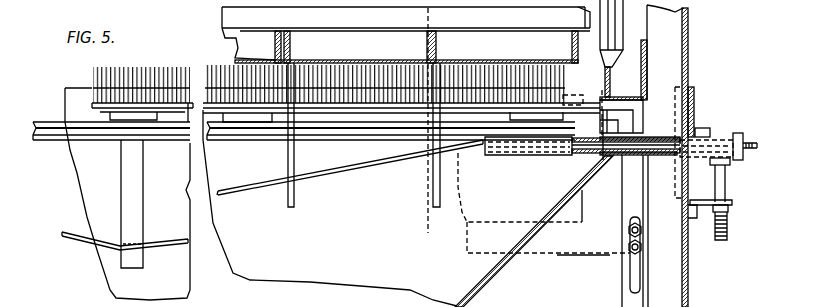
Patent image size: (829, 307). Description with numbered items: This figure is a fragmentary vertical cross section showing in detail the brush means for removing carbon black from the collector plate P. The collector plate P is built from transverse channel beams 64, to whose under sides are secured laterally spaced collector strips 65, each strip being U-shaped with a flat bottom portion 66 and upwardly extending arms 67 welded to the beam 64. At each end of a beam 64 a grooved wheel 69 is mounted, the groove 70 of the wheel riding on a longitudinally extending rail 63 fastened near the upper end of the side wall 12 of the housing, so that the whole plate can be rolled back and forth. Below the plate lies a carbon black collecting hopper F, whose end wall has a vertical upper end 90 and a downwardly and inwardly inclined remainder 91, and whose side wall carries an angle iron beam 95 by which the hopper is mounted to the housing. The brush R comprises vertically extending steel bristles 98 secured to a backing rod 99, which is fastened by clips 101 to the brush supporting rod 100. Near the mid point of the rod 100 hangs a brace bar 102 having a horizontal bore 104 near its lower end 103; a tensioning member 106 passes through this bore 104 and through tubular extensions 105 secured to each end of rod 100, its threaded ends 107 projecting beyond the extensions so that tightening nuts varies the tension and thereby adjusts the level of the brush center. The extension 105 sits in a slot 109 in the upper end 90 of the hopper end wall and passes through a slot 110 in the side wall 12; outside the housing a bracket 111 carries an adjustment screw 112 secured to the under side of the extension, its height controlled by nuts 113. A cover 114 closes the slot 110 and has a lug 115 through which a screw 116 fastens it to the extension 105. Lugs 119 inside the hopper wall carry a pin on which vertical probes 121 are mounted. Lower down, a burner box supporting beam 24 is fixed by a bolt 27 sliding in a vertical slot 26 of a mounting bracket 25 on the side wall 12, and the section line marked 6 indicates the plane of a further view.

The steel bristles 98 is at (100, 78).
The brush R is at (57, 152).
The backing rod 99 is at (246, 197).
The clips 101 is at (150, 122).
The brush supporting rod 100 is at (265, 140).
The brace bar 102 is at (127, 193).
The horizontal bore 104 is at (137, 242).
The lower end of brace bar 103 is at (143, 265).
The tensioning member 106 is at (65, 242).
The lugs 119 is at (347, 140).
The carbon black collecting hopper F is at (335, 267).
The arms 67 is at (275, 30).
The vertical probes 121 is at (292, 45).
The collector strips 65 is at (342, 57).
The flat bottom portion 66 is at (383, 60).
The section line 6- 6 is at (408, 8).
The collector plate P is at (497, 43).
The grooved wheel 69 is at (588, 27).
The channel beams 64 is at (523, 30).
The groove 70 is at (620, 43).
The rail 63 is at (607, 80).
The angle iron beam 95 is at (630, 113).
The cover 114 is at (693, 87).
The slot 110 is at (694, 103).
The screw 116 is at (704, 130).
The lug 115 is at (712, 135).
The threaded ends 107 is at (757, 147).
The tubular extension 105 is at (530, 153).
The slot 109 is at (605, 180).
The nuts 113 is at (730, 210).
The adjustment screw 112 is at (727, 230).
The bracket 111 is at (697, 218).
The side wall 12 is at (688, 277).
The mounting bracket 25 is at (642, 177).
The vertical slot 26 is at (643, 273).
The bolt 27 is at (642, 247).
The upper end of end wall 90 is at (544, 204).
The remainder of end wall 91 is at (560, 212).
The burner box supporting beam 24 is at (497, 282).